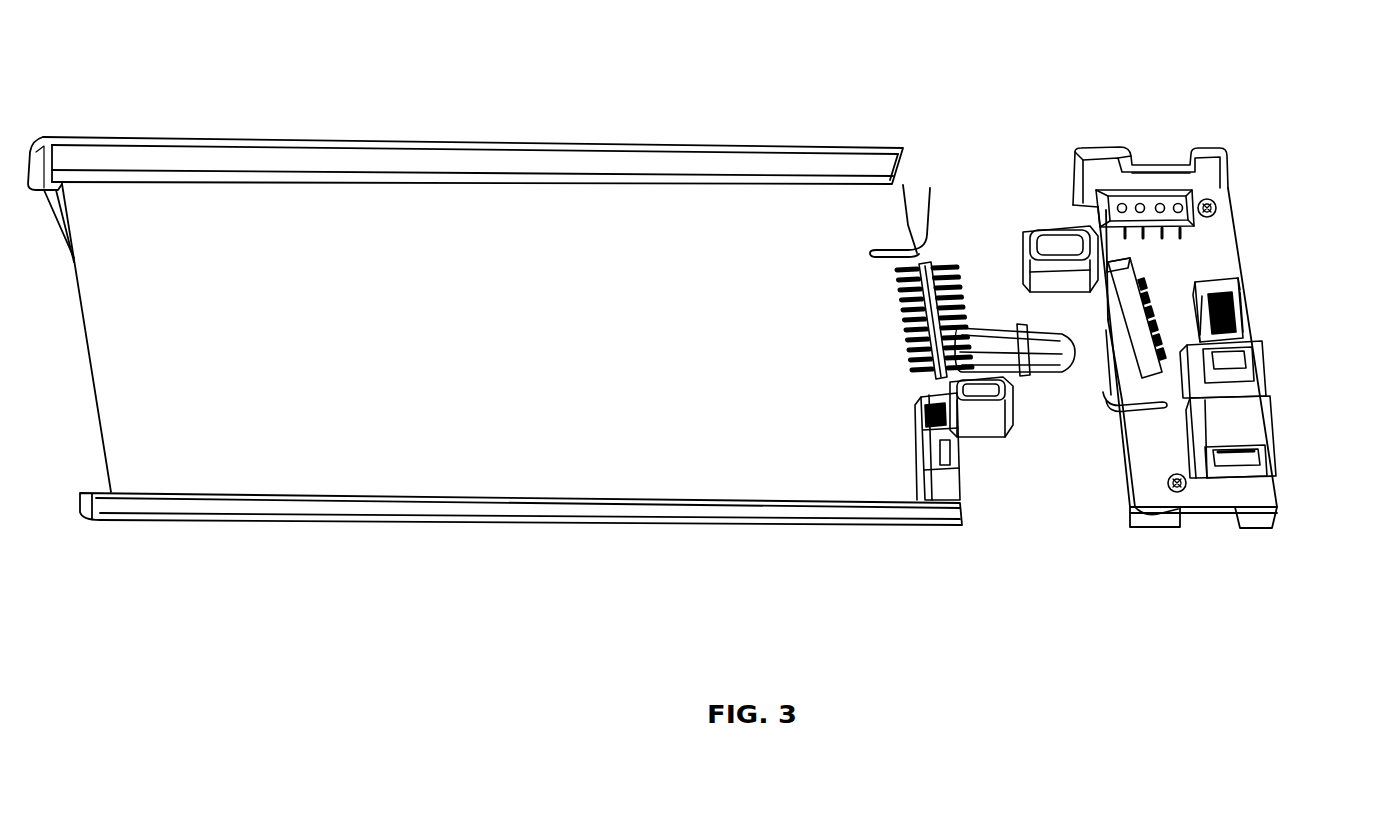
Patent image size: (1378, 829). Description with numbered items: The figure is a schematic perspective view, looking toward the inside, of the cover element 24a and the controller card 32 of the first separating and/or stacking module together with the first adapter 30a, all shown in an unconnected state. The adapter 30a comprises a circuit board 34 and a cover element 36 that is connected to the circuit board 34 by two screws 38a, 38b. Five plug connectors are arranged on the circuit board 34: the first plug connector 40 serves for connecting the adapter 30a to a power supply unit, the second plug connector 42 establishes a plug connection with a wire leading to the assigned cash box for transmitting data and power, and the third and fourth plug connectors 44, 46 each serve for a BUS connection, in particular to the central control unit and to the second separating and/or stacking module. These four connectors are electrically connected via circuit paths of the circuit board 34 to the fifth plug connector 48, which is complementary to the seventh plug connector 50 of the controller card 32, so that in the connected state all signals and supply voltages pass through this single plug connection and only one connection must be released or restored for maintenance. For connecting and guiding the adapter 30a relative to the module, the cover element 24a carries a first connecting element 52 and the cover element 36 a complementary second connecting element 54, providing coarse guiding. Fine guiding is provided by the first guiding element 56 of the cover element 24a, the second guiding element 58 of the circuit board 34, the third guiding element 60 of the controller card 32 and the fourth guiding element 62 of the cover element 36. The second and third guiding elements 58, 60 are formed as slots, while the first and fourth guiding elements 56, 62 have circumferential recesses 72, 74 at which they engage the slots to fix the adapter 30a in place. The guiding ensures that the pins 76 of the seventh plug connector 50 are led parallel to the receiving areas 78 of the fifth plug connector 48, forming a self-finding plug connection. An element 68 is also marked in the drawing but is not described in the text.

The cover element 24a is at (345, 140).
The adapter 30a is at (1157, 118).
The controller card 32 is at (495, 292).
The circuit board 34 is at (1212, 238).
The cover element 36 is at (1172, 178).
The screw 38a is at (1181, 492).
The screw 38b is at (1216, 206).
The first plug connector 40 is at (1115, 200).
The second plug connector 42 is at (1235, 310).
The third plug connector 44 is at (1242, 365).
The fourth plug connector 46 is at (1248, 427).
The fifth plug connector 48 is at (1118, 295).
The seventh plug connector 50 is at (919, 260).
The first connecting element 52 is at (993, 337).
The second connecting element 54 is at (1092, 337).
The first guiding element 56 is at (975, 430).
The second guiding element 58 is at (1107, 410).
The third guiding element 60 is at (926, 250).
The fourth guiding element 62 is at (1052, 228).
The clip 68 is at (1023, 330).
The circumferential recess 72 is at (995, 410).
The circumferential recess 74 is at (1050, 268).
The pins 76 is at (956, 308).
The receiving areas 78 is at (1100, 355).